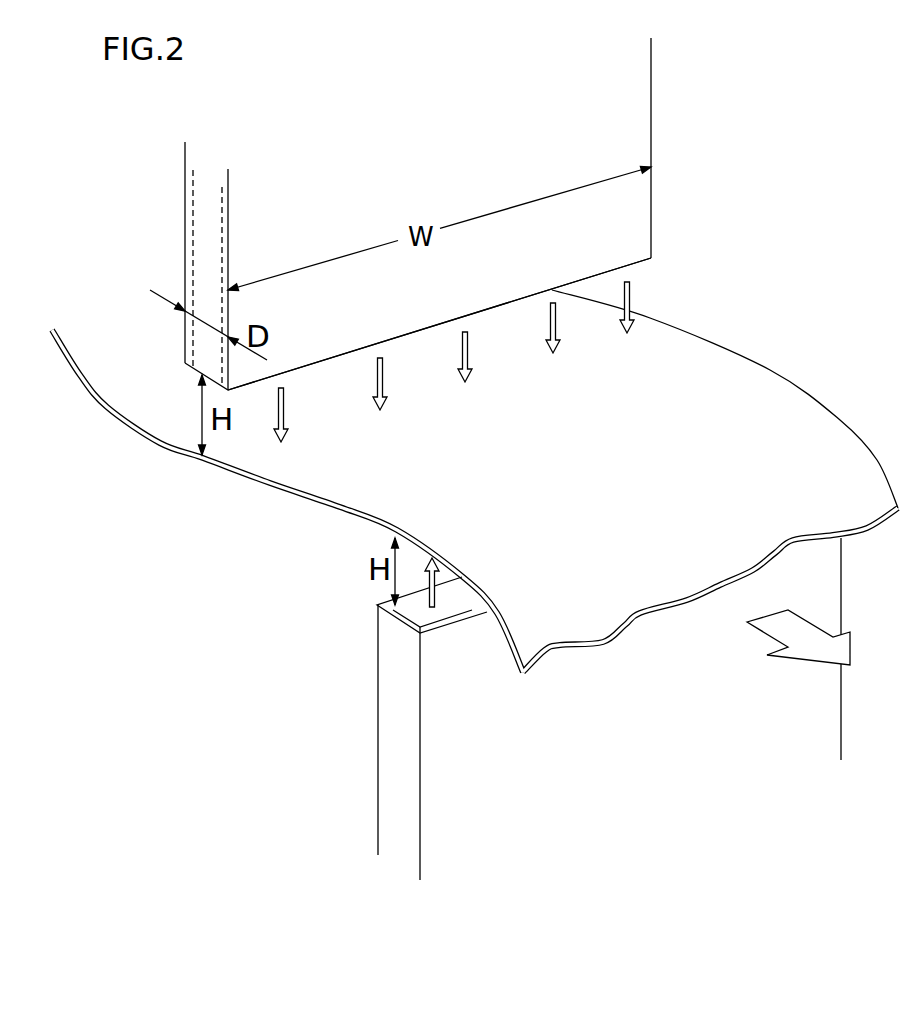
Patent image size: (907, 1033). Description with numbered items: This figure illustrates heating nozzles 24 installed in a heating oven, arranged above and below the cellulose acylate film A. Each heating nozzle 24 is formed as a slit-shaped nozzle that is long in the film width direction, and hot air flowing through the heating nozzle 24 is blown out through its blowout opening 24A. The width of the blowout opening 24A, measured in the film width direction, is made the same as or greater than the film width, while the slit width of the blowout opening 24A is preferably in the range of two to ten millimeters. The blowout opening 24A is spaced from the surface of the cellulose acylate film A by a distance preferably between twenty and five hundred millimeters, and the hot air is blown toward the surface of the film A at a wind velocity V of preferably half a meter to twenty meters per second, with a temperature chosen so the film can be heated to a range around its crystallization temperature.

The heating nozzle 24 is at (636, 207).
The blowout opening 24A is at (316, 362).
The cellulose acylate film A is at (765, 393).
The flow velocity arrows V is at (470, 347).